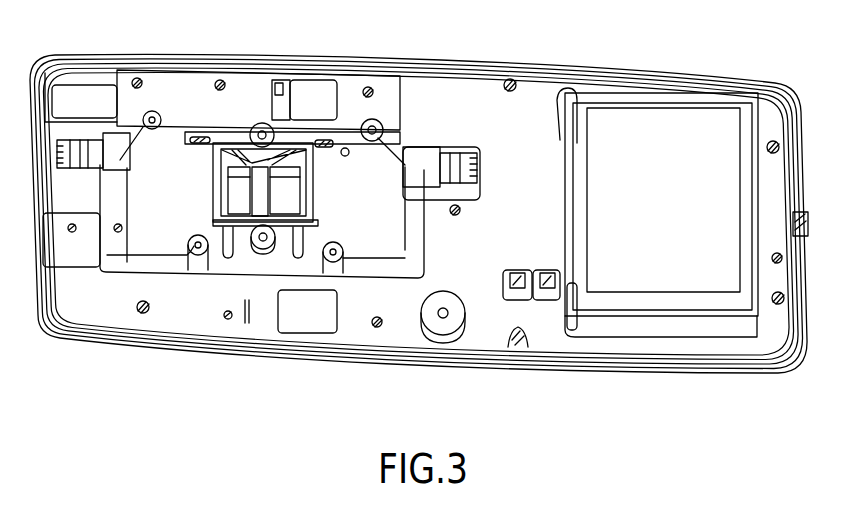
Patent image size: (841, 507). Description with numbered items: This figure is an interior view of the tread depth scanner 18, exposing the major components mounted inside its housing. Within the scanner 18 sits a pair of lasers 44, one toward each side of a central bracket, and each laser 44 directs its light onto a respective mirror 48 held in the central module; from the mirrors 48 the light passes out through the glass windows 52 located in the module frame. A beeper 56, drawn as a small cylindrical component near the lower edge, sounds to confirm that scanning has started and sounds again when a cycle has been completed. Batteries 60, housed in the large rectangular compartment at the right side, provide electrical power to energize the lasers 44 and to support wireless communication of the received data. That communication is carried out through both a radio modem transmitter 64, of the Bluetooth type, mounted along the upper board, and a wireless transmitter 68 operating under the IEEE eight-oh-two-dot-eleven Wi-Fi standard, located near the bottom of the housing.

The tread depth scanner 18 is at (190, 55).
The lasers 44 is at (172, 199).
The mirrors 48 is at (233, 187).
The glass windows 52 is at (233, 211).
The beeper 56 is at (457, 300).
The batteries 60 is at (724, 218).
The radio modem transmitter 64 is at (300, 88).
The wireless transmitter 68 is at (287, 318).